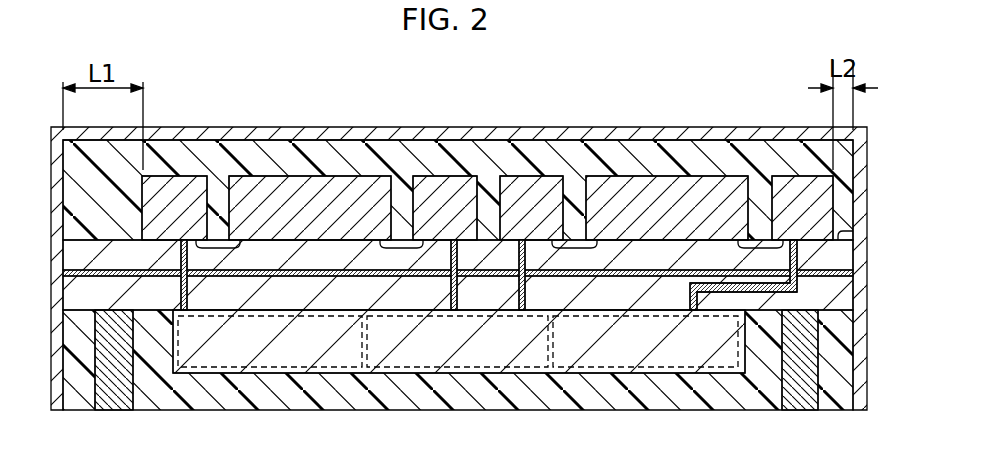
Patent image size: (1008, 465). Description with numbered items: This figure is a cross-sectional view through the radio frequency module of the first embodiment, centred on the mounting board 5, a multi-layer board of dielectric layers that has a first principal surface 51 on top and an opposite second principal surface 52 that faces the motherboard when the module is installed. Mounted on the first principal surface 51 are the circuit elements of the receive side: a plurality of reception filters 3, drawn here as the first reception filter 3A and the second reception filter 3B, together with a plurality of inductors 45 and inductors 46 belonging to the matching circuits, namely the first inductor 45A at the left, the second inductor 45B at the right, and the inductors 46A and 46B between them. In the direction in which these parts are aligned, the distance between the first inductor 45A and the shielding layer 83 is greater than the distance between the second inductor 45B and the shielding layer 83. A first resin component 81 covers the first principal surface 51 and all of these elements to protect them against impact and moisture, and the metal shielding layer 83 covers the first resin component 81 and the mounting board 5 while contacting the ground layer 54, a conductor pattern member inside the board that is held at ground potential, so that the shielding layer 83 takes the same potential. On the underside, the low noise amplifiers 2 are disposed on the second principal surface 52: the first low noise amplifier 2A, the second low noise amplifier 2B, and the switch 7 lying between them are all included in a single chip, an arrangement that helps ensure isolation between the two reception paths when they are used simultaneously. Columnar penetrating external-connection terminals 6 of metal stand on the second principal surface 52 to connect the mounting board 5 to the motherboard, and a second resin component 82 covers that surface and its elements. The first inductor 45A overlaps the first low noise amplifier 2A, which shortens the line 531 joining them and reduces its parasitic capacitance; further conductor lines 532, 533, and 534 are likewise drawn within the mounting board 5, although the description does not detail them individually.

The low noise amplifier 2 is at (458, 384).
The first low noise amplifier 2A is at (278, 362).
The second low noise amplifier 2B is at (670, 357).
The reception filter 3 is at (488, 152).
The first reception filter 3A is at (285, 192).
The second reception filter 3B is at (695, 190).
The mounting board 5 is at (482, 270).
The external-connection terminal 6 is at (115, 397).
The switch 7 is at (465, 362).
The inductor 45 is at (487, 152).
The first inductor 45A is at (188, 192).
The second inductor 45B is at (790, 185).
The inductor 46 is at (491, 152).
The second inductor 46A is at (432, 188).
The second inductor 46B is at (550, 188).
The first principal surface 51 is at (837, 240).
The second principal surface 52 is at (836, 313).
The ground layer 54 is at (855, 276).
The line 531 is at (179, 289).
The via conductor 532 is at (692, 293).
The via conductor 533 is at (449, 290).
The via conductor 534 is at (527, 289).
The first resin component 81 is at (348, 150).
The second resin component 82 is at (842, 362).
The shielding layer 83 is at (633, 133).